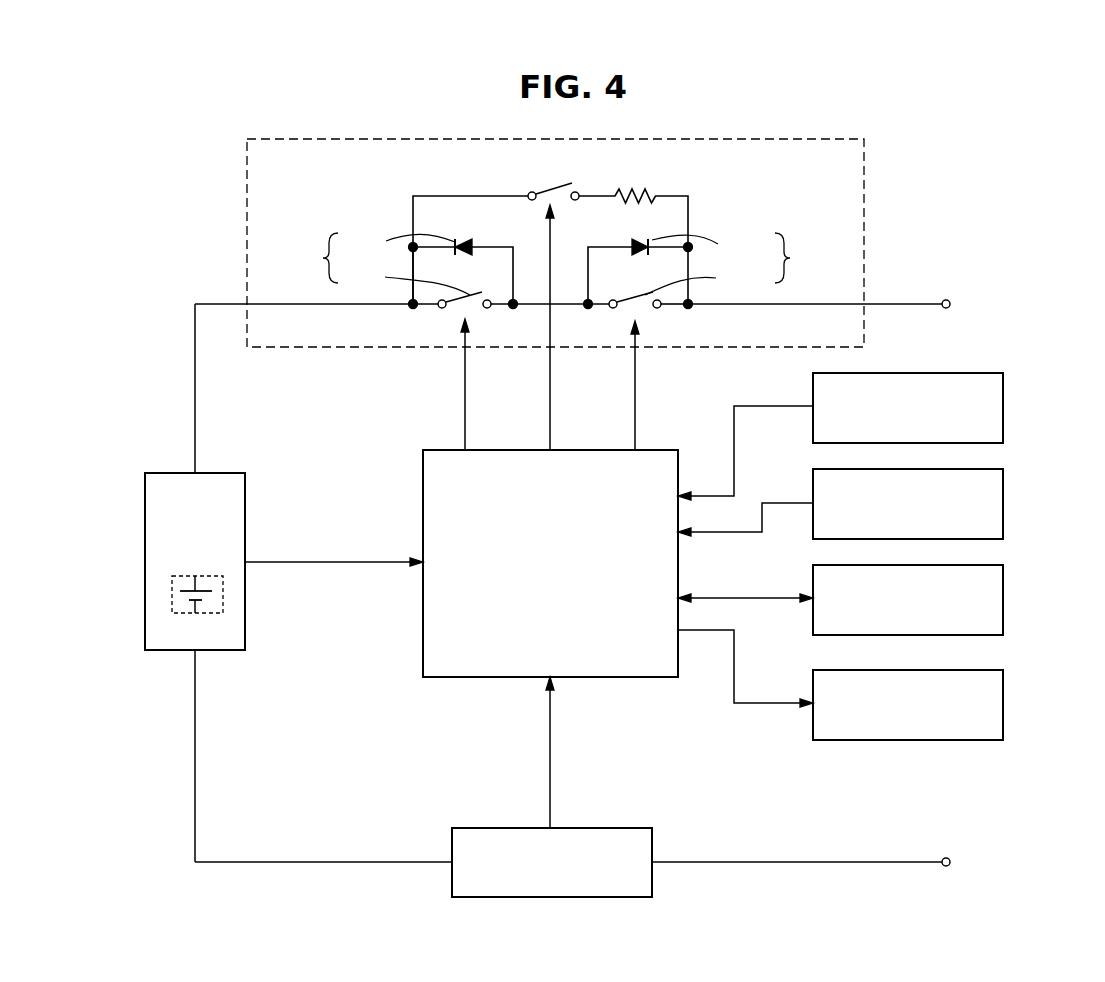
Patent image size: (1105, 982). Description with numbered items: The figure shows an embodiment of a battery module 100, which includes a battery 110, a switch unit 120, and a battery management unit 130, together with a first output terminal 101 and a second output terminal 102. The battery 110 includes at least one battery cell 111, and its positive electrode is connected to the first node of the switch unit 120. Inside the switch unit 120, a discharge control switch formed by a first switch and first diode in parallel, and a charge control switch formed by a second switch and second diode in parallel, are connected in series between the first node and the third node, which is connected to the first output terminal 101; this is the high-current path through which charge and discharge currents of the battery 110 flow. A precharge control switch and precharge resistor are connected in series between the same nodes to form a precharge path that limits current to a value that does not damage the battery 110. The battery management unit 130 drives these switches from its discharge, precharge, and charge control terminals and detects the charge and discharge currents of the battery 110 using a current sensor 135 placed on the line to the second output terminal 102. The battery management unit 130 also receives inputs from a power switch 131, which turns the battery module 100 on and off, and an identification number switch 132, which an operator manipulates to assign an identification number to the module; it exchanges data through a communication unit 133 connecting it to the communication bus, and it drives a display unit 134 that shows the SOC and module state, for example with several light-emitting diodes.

The battery module 100 is at (1009, 82).
The first output terminal 101 is at (950, 300).
The second output terminal 102 is at (950, 858).
The battery 110 is at (212, 473).
The battery cell 111 is at (205, 591).
The switch unit 120 is at (790, 138).
The battery management unit 130 is at (650, 450).
The power switch 131 is at (1003, 406).
The identification number switch 132 is at (1003, 503).
The communication unit 133 is at (1003, 598).
The display unit 134 is at (1003, 703).
The current sensor 135 is at (613, 827).